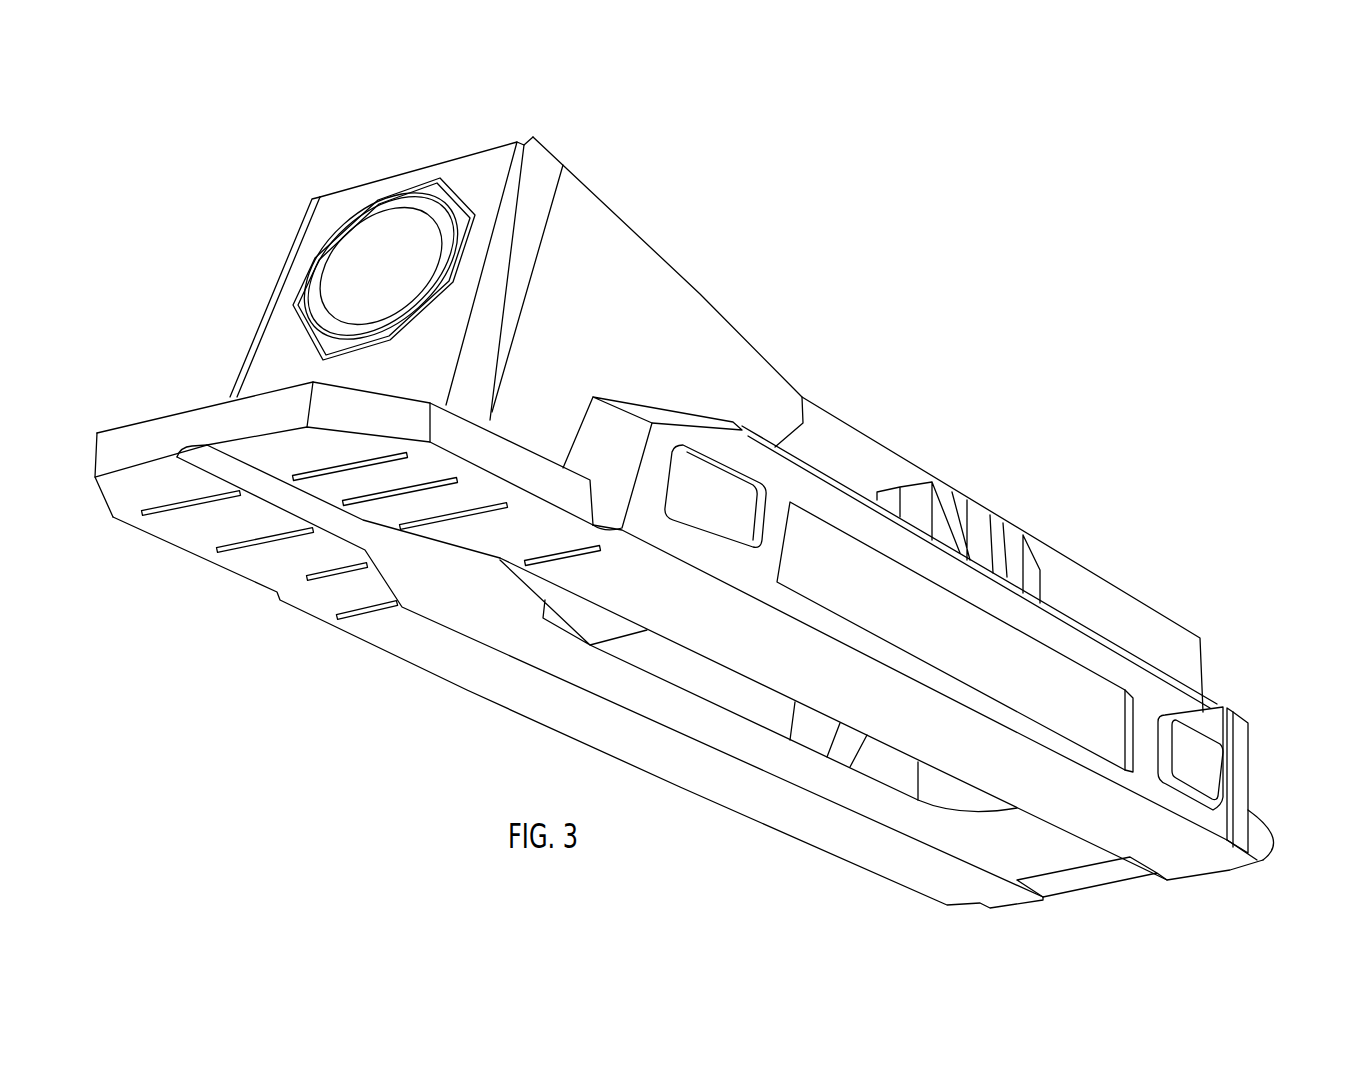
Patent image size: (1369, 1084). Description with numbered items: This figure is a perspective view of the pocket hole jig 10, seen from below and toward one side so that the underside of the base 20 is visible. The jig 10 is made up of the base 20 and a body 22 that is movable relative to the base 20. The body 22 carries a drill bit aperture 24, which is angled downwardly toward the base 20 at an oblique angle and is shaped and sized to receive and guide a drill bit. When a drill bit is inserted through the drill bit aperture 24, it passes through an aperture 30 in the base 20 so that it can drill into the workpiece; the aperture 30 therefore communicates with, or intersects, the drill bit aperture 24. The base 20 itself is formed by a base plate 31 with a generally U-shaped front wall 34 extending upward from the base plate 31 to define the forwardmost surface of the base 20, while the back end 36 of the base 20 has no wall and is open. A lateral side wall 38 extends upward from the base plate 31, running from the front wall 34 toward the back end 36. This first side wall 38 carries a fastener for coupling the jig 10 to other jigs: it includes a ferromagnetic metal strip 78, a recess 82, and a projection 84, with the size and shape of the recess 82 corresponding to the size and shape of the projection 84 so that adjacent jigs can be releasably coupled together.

The jig 10 is at (905, 236).
The base 20 is at (200, 560).
The body 22 is at (358, 188).
The drill bit aperture 24 is at (325, 258).
The aperture 30 is at (487, 643).
The base plate 31 is at (228, 417).
The front wall 34 is at (1250, 762).
The back end 36 is at (142, 420).
The side wall 38 is at (1130, 670).
The metal strip 78 is at (838, 552).
The recess 82 is at (697, 495).
The projection 84 is at (1185, 753).